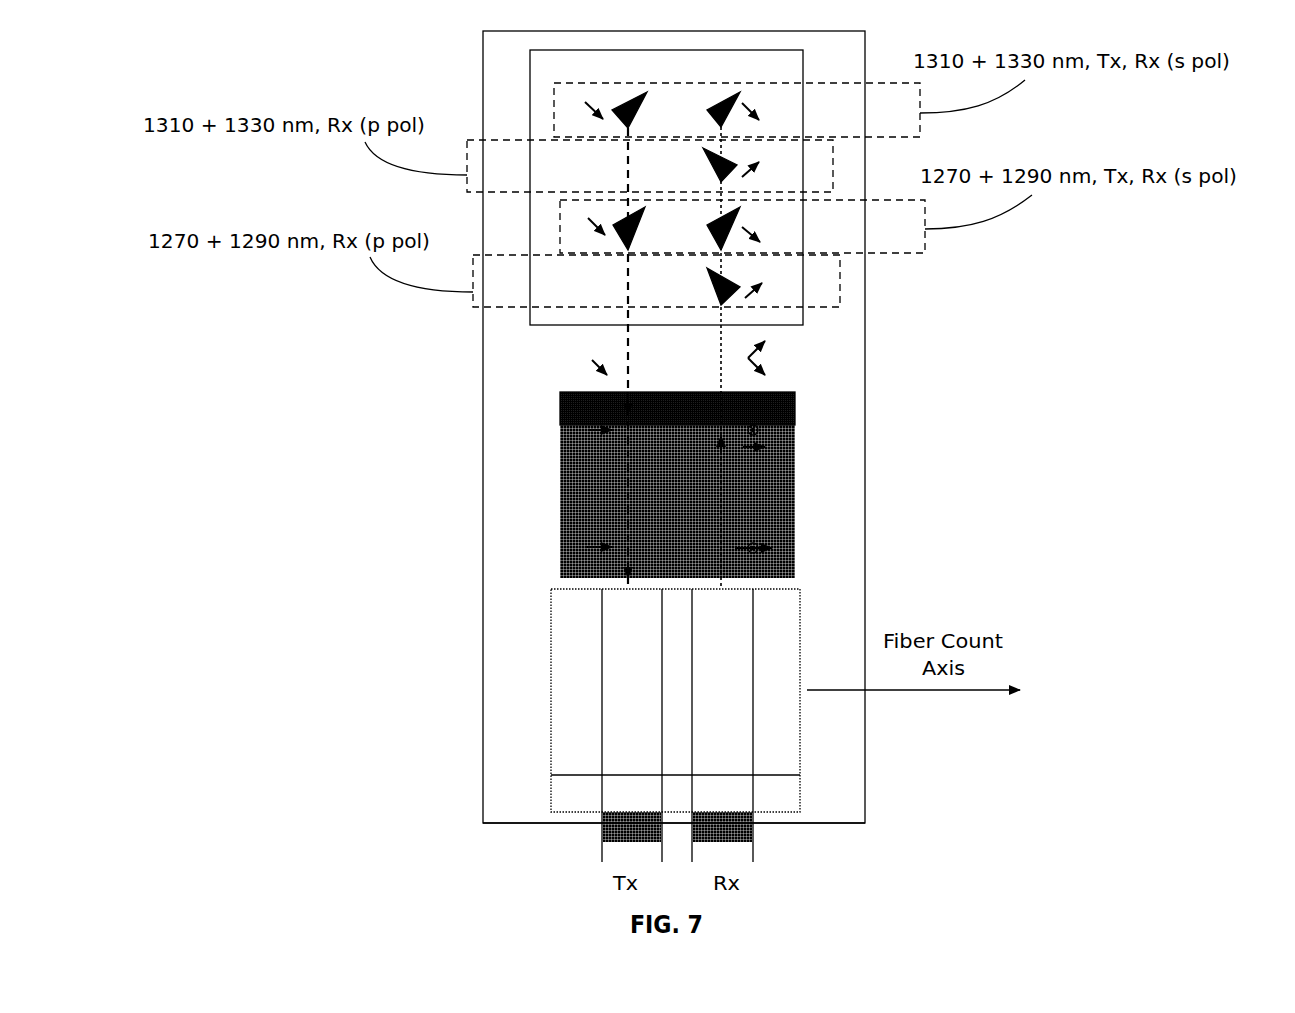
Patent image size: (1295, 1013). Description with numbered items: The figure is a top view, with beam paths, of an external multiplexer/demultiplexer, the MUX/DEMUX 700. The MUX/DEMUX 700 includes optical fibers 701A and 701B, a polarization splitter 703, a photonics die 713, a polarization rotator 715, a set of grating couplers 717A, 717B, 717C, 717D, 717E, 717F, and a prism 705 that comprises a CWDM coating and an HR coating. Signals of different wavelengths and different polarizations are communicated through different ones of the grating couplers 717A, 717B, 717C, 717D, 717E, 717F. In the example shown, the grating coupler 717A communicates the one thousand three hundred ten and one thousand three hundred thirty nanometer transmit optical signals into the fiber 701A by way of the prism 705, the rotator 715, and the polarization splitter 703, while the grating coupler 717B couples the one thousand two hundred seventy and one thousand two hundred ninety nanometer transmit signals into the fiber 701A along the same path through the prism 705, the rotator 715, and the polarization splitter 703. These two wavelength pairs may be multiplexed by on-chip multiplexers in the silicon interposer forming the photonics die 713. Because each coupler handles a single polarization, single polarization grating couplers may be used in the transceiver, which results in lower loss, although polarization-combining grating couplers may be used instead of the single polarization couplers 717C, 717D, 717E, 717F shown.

The MUX/DEMUX 700 is at (132, 77).
The prism 705 is at (530, 62).
The photonics die 713 is at (674, 586).
The polarization rotator 715 is at (677, 408).
The polarization splitter 703 is at (677, 501).
The optical fiber 701A is at (632, 725).
The optical fiber 701B is at (722, 725).
The grating coupler 717A is at (625, 102).
The grating coupler 717B is at (740, 98).
The grating coupler 717C is at (713, 163).
The grating coupler 717D is at (627, 217).
The grating coupler 717E is at (733, 220).
The grating coupler 717F is at (720, 290).